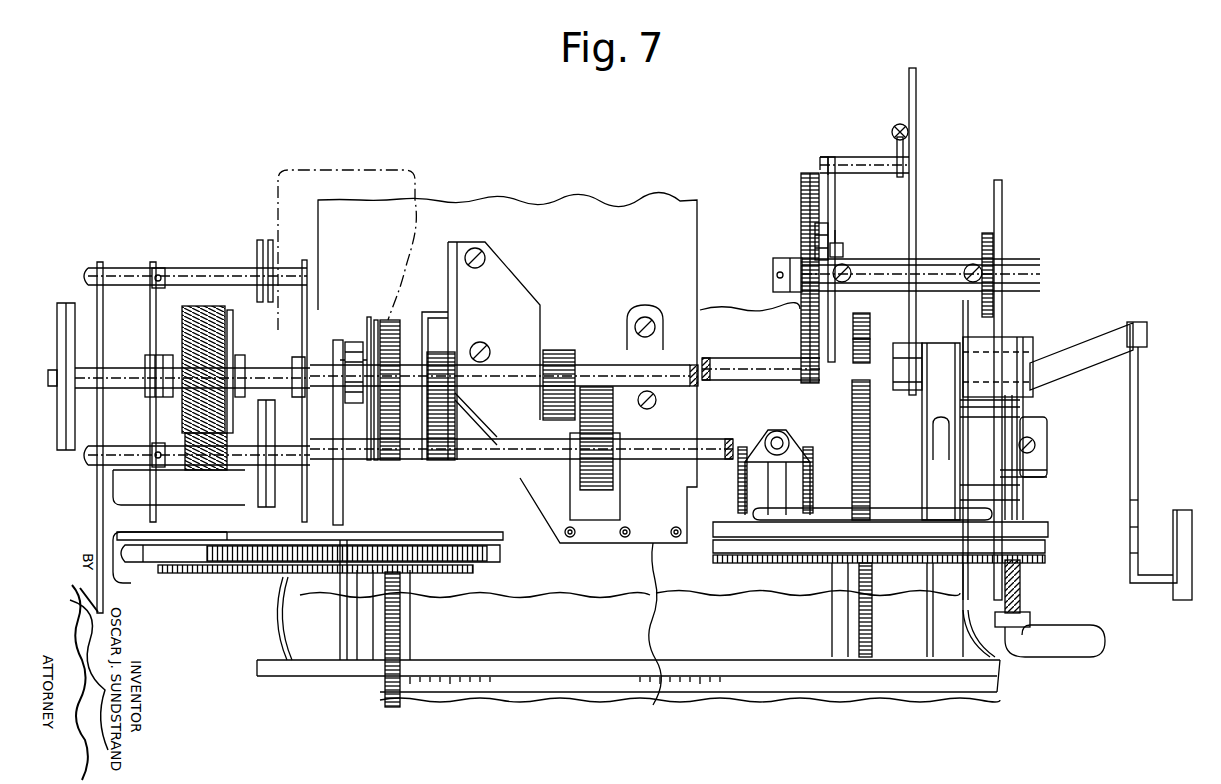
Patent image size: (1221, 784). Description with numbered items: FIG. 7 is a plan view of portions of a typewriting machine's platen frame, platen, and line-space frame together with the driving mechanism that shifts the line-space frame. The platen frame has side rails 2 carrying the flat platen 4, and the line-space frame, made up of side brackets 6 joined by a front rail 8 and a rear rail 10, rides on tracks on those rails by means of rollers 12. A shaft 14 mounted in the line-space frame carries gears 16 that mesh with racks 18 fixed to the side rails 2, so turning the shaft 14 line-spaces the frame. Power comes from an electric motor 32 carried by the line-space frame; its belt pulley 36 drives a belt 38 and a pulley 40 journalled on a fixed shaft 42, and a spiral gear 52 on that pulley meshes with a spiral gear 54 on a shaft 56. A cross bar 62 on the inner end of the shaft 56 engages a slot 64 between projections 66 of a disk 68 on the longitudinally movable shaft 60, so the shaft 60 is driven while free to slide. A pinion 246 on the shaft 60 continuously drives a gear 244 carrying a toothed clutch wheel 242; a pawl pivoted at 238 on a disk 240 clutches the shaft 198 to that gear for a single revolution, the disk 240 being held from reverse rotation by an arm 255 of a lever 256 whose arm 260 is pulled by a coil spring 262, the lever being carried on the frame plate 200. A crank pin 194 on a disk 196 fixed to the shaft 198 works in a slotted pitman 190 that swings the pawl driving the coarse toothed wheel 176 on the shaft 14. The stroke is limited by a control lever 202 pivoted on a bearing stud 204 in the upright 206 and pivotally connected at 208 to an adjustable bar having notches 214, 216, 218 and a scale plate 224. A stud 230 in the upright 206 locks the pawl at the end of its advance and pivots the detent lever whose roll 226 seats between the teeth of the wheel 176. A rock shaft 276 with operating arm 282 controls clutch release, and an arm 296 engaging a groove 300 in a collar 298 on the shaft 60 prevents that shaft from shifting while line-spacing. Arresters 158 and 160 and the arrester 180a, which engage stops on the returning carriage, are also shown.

The side rails 2 is at (410, 652).
The platen 4 is at (673, 600).
The side brackets 6 is at (285, 632).
The front rail 8 is at (257, 672).
The rear rail 10 is at (1037, 522).
The wheels or rollers 12 is at (427, 425).
The shaft 14 is at (704, 439).
The gears 16 is at (380, 470).
The racks 18 is at (400, 622).
The electric driving motor 32 is at (338, 178).
The belt pulley 36 is at (256, 244).
The belt 38 is at (258, 332).
The pulley 40 is at (258, 491).
The fixed shaft 42 is at (175, 466).
The spiral gear 52 is at (208, 470).
The spiral gear 54 is at (182, 322).
The shaft 56 is at (112, 368).
The longitudinally movable shaft 60 is at (587, 365).
The cross bar 62 is at (350, 342).
The slot 64 is at (372, 335).
The projections 66 is at (356, 342).
The disk 68 is at (400, 308).
The arrester 158 is at (405, 570).
The arrester 160 is at (470, 555).
The coarse toothed wheel 176 is at (1020, 492).
The stop block or arrester 180a is at (300, 555).
The link or pitman 190 is at (1003, 288).
The crank pin 194 is at (995, 250).
The disk 196 is at (1002, 205).
The shaft 198 is at (773, 275).
The bracket 200 is at (916, 203).
The control lever 202 is at (1090, 350).
The bearing stud 204 is at (1033, 360).
The upright 206 is at (930, 398).
The pivotal connection 208 is at (1147, 336).
The notch 214 is at (1130, 553).
The notch 216 is at (1130, 528).
The notch 218 is at (1130, 503).
The scale plate 224 is at (1180, 510).
The detent roll 226 is at (1047, 465).
The stud 230 is at (1047, 425).
The pivot 238 is at (820, 160).
The disk 240 is at (834, 262).
The toothed clutch wheel 242 is at (815, 248).
The gear 244 is at (801, 188).
The pinion 246 is at (801, 330).
The arm 255 is at (835, 193).
The lever 256 is at (840, 157).
The arm 260 is at (897, 150).
The coil spring 262 is at (893, 128).
The rock shaft 276 is at (1020, 591).
The operating arm 282 is at (1060, 657).
The arm 296 is at (866, 322).
The collar 298 is at (800, 380).
The groove 300 is at (858, 362).